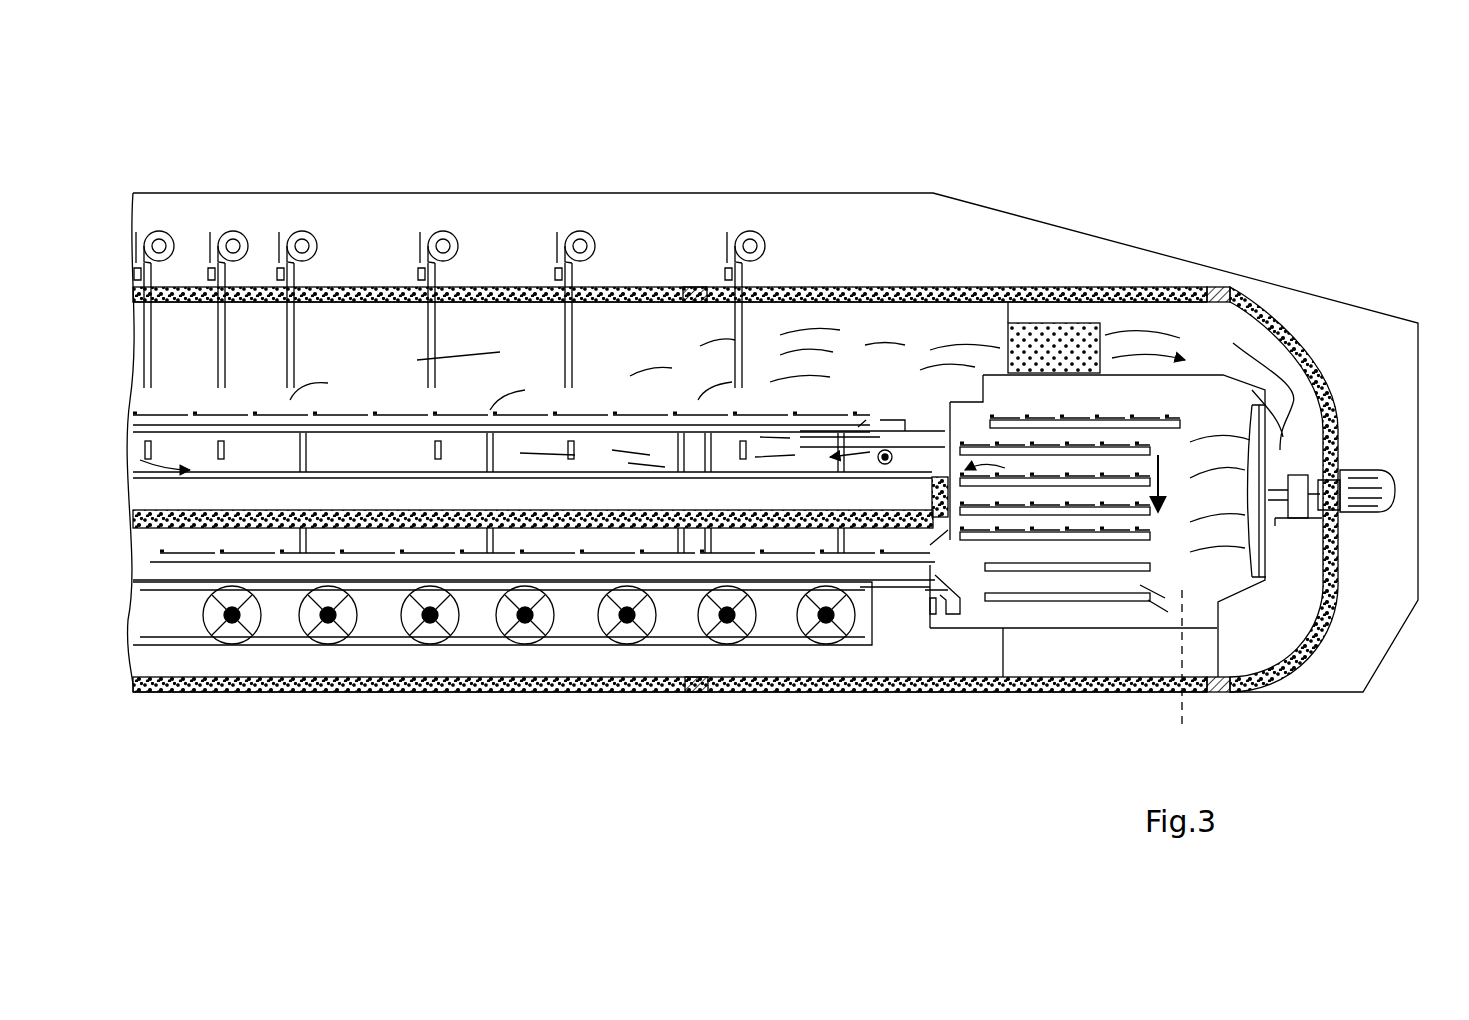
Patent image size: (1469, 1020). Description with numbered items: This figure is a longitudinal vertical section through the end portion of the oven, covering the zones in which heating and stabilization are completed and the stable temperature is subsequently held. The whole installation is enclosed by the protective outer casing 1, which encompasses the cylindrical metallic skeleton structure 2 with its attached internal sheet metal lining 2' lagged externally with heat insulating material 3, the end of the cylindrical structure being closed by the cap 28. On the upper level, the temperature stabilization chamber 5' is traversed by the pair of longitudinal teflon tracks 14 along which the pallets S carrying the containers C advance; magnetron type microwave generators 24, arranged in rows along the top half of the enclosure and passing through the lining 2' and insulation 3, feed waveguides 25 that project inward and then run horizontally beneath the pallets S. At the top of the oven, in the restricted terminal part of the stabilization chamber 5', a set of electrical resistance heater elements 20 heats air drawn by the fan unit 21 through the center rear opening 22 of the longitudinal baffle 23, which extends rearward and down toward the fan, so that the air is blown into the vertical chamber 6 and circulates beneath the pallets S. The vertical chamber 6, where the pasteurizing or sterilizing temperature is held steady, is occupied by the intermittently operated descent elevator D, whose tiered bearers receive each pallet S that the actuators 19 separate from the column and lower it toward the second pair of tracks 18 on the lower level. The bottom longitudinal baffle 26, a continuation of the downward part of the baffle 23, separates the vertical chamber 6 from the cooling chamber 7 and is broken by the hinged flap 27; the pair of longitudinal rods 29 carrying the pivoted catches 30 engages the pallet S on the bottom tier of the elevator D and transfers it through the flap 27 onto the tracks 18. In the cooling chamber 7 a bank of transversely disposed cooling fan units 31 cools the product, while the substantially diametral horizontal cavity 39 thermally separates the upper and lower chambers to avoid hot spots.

The protective outer casing 1 is at (833, 193).
The cylindrical metallic skeleton structure 2 is at (670, 195).
The internal sheet metal lining 2' is at (716, 450).
The heat insulating material 3 is at (508, 287).
The temperature stabilization chamber 5' is at (286, 254).
The vertical chamber 6 is at (1215, 416).
The cooling chamber 7 is at (155, 663).
The longitudinal teflon tracks 14 is at (625, 432).
The lower longitudinal tracks 18 is at (913, 565).
The actuators 19 is at (903, 420).
The electrical resistance heater elements 20 is at (1050, 330).
The fan unit 21 is at (1282, 456).
The center rear opening 22 is at (1300, 550).
The longitudinal baffle 23 is at (945, 395).
The magnetron type microwave generator 24 is at (438, 247).
The waveguides 25 is at (157, 448).
The bottom longitudinal baffle 26 is at (1003, 692).
The hinged flap 27 is at (932, 548).
The cap 28 is at (1338, 362).
The longitudinal rods 29 is at (885, 655).
The pivoted catches 30 is at (960, 612).
The cooling fan units 31 is at (727, 625).
The horizontal cavity 39 is at (647, 493).
The pallets S is at (1092, 452).
The containers C is at (1058, 522).
The descent elevator D is at (1135, 400).